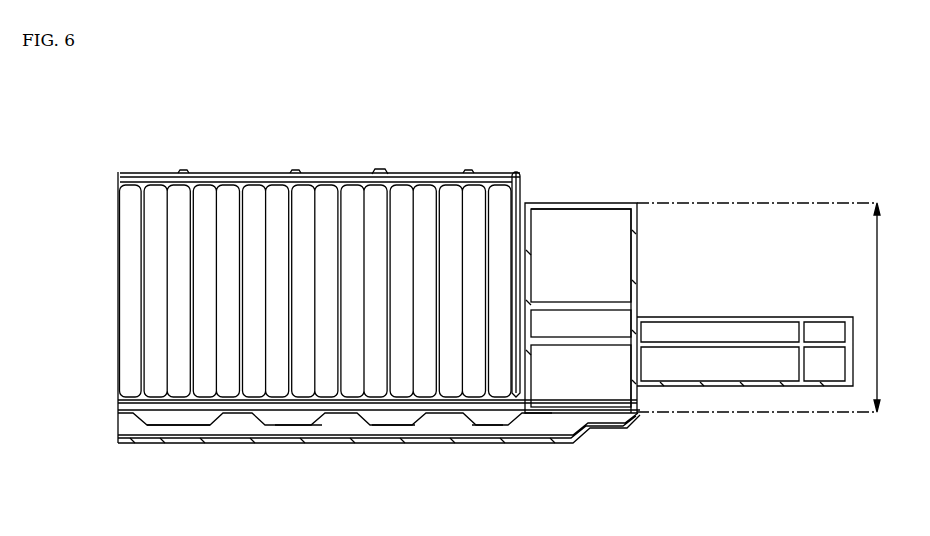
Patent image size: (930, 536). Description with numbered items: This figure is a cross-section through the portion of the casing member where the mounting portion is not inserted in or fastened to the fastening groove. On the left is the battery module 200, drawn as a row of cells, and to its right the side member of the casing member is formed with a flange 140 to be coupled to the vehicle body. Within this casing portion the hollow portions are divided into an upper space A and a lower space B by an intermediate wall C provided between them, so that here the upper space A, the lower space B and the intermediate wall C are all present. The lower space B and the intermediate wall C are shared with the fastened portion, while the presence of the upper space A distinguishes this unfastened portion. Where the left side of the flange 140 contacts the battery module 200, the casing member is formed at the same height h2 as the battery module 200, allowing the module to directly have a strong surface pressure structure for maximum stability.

The battery module 200 is at (351, 198).
The flange 140 is at (689, 309).
The upper space A is at (586, 242).
The lower space B is at (590, 376).
The intermediate wall C is at (605, 302).
The height h2 is at (776, 307).